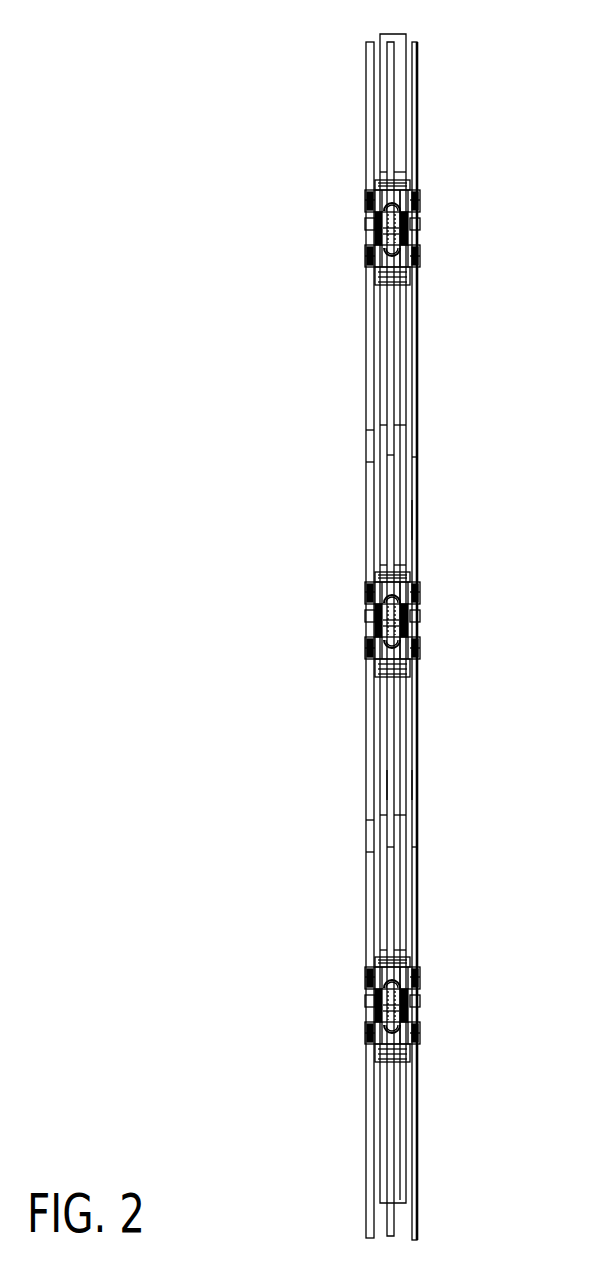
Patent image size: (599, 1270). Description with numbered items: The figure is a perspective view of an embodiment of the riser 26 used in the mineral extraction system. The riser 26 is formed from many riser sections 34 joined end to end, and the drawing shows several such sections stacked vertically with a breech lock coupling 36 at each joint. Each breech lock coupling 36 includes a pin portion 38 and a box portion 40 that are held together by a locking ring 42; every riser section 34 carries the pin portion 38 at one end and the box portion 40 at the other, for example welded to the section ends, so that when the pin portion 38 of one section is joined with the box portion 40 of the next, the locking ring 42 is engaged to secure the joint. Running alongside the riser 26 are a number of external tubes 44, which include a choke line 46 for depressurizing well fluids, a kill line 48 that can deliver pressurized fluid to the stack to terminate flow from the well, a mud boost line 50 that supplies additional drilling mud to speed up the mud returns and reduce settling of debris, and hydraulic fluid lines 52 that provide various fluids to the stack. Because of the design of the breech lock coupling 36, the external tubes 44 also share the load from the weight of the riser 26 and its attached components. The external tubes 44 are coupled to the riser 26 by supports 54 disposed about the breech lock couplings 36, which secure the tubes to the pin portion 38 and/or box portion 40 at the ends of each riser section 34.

The riser 26 is at (200, 62).
The riser section 34 is at (433, 92).
The breech lock coupling 36 is at (430, 233).
The pin portion 38 is at (376, 262).
The box portion 40 is at (380, 188).
The locking ring 42 is at (378, 226).
The external tube 44 is at (388, 390).
The choke line 46 is at (368, 455).
The kill line 48 is at (413, 519).
The mud boost line 50 is at (418, 785).
The hydraulic fluid line 52 is at (388, 792).
The support 54 is at (420, 207).